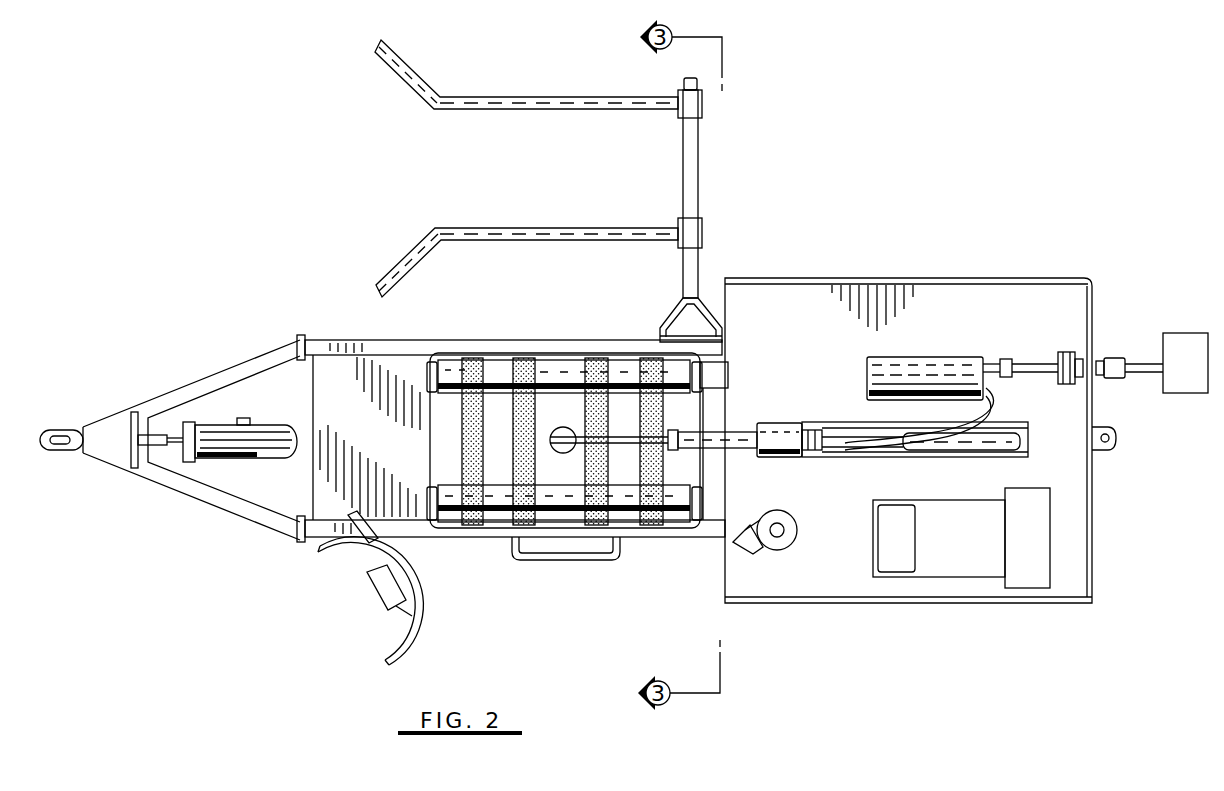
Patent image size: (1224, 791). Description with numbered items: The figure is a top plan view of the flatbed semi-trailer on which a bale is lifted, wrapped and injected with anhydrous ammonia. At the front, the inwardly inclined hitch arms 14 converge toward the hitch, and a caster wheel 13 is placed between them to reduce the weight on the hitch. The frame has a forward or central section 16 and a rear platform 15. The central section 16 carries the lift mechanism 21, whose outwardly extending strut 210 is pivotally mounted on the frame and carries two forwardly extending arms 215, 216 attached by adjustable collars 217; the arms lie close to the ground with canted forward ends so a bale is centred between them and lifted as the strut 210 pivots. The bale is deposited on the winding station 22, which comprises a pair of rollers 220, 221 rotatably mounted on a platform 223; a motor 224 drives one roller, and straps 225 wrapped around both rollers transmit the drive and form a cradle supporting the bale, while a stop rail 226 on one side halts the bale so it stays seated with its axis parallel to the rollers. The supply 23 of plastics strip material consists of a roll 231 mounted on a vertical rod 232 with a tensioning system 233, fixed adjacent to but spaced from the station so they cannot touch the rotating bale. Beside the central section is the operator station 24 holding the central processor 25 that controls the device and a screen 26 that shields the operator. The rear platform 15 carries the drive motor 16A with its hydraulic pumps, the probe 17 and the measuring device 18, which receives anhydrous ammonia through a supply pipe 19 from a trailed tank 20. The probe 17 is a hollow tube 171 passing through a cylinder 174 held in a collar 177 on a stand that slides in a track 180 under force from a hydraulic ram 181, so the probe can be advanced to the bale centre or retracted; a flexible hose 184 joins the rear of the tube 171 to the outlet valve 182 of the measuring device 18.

The caster wheel 13 is at (280, 455).
The hitch arms 14 is at (224, 380).
The rear platform 15 is at (956, 274).
The forward section 16 is at (481, 334).
The drive motor 16A is at (1056, 538).
The probe 17 is at (1042, 460).
The measuring device 18 is at (943, 357).
The supply pipe 19 is at (1139, 361).
The trailed tank 20 is at (1190, 378).
The lift mechanism 21 is at (712, 193).
The winding station 22 is at (583, 570).
The supply of plastics strip material 23 is at (803, 559).
The operator station 24 is at (373, 623).
The central processor 25 is at (374, 581).
The screen 26 is at (423, 606).
The hollow tube 171 is at (571, 412).
The cylinder 174 is at (743, 440).
The collar 177 is at (765, 434).
The track 180 is at (888, 457).
The hydraulic ram 181 is at (982, 446).
The outlet valve 182 is at (990, 393).
The flexible hose 184 is at (868, 437).
The strut 210 is at (692, 157).
The arm 215 is at (558, 233).
The arm 216 is at (485, 108).
The collars 217 is at (697, 103).
The roller 220 is at (557, 370).
The roller 221 is at (628, 515).
The platform 223 is at (446, 443).
The motor 224 is at (717, 378).
The straps 225 is at (652, 362).
The stop rail 226 is at (548, 561).
The roll 231 is at (794, 539).
The vertical rod 232 is at (779, 527).
The tensioning system 233 is at (743, 548).